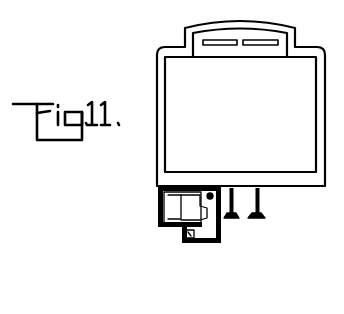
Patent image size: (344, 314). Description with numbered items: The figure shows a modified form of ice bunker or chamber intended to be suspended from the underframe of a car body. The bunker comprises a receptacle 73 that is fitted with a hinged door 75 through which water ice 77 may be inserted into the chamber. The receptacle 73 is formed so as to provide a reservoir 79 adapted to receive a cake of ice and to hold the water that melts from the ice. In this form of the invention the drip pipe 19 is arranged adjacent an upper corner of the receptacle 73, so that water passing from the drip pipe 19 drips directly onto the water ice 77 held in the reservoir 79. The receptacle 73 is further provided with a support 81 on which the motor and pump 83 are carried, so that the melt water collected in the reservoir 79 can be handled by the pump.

The drip pipe 19 is at (213, 187).
The receptacle 73 is at (221, 225).
The hinged door 75 is at (158, 210).
The water ice 77 is at (193, 195).
The reservoir 79 is at (212, 243).
The support 81 is at (184, 244).
The motor and pump 83 is at (178, 237).